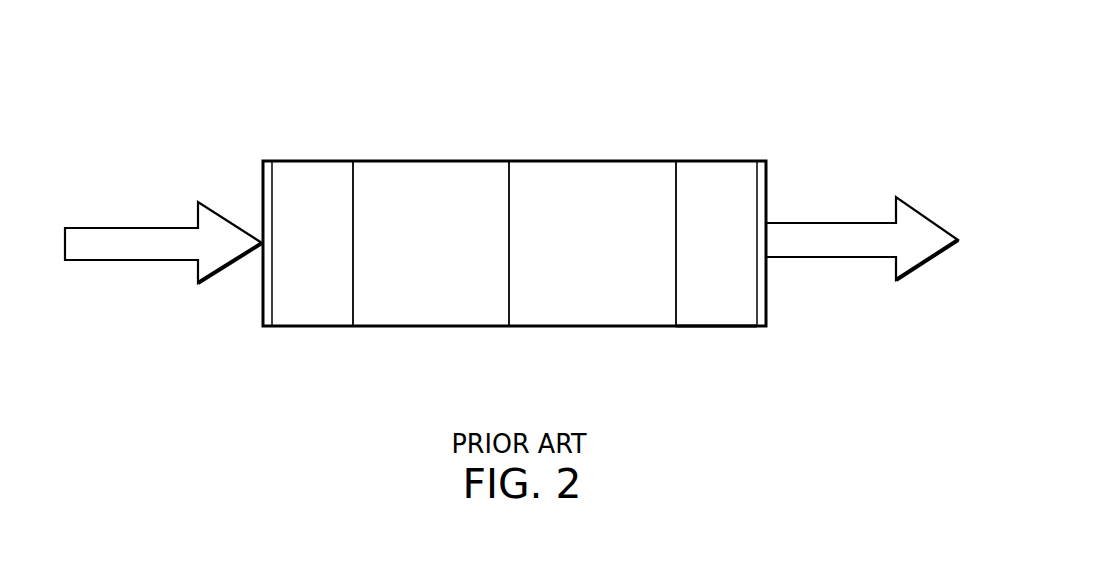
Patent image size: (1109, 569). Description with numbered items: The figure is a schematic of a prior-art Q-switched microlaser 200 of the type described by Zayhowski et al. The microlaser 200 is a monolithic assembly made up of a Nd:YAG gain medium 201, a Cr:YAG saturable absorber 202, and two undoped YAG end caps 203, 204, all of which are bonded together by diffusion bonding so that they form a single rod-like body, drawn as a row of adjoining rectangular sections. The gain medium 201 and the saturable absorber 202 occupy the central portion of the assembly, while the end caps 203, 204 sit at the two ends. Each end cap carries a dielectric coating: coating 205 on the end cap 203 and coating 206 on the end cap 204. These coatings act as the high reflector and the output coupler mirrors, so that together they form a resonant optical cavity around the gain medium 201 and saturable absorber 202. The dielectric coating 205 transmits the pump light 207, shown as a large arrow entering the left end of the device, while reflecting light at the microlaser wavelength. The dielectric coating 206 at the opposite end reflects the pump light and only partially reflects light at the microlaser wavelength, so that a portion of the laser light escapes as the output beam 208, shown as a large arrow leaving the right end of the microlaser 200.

The microlaser 200 is at (513, 203).
The Nd:YAG gain medium 201 is at (447, 329).
The Cr:YAG saturable absorber 202 is at (600, 329).
The undoped YAG end cap 203 is at (312, 329).
The undoped YAG end cap 204 is at (722, 329).
The dielectric coating 205 is at (268, 160).
The dielectric coating 206 is at (762, 159).
The pump light 207 is at (127, 226).
The output beam 208 is at (833, 222).